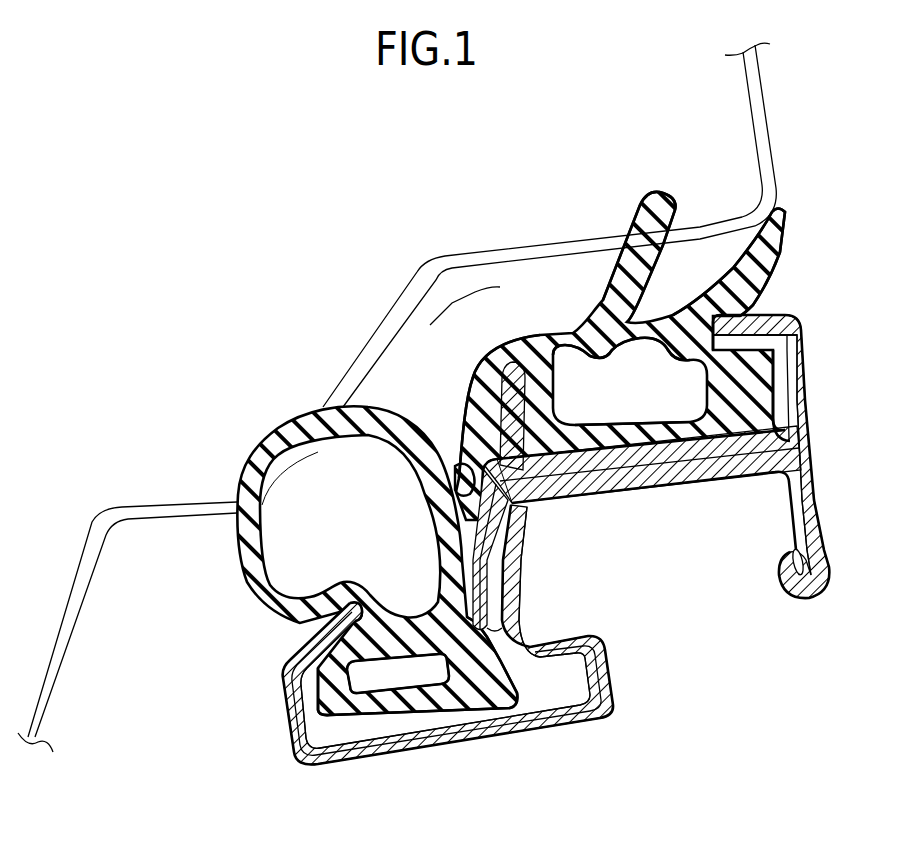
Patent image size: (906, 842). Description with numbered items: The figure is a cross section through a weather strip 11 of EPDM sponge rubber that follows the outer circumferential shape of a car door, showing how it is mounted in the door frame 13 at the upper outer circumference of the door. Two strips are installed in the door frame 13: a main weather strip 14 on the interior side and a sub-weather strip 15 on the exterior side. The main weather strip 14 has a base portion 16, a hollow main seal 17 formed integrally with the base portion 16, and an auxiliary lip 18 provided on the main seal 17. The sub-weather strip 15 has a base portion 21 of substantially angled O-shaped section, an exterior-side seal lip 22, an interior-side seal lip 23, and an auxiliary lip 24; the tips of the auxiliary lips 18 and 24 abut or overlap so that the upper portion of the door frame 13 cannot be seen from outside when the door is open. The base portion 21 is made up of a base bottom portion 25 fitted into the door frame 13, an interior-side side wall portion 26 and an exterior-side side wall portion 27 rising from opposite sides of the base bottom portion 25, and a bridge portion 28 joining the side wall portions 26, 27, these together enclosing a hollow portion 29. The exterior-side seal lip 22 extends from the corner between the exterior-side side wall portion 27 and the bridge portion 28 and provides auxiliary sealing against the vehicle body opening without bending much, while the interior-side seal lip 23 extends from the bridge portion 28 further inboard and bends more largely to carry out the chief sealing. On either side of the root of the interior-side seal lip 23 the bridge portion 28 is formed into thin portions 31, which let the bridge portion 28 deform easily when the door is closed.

The weather strip 11 is at (465, 300).
The door frame 13 is at (728, 482).
The main weather strip 14 is at (398, 401).
The sub-weather strip 15 is at (535, 330).
The base portion 16 is at (403, 700).
The hollow main seal 17 is at (238, 548).
The auxiliary lip 18 is at (455, 468).
The base portion 21 is at (767, 354).
The exterior-side seal lip 22 is at (778, 252).
The interior-side seal lip 23 is at (618, 285).
The auxiliary lip 24 is at (466, 402).
The base bottom portion 25 is at (657, 430).
The interior-side side wall portion 26 is at (537, 477).
The exterior-side side wall portion 27 is at (762, 397).
The bridge portion 28 is at (607, 340).
The hollow portion 29 is at (606, 414).
The thin portions 31 is at (567, 348).